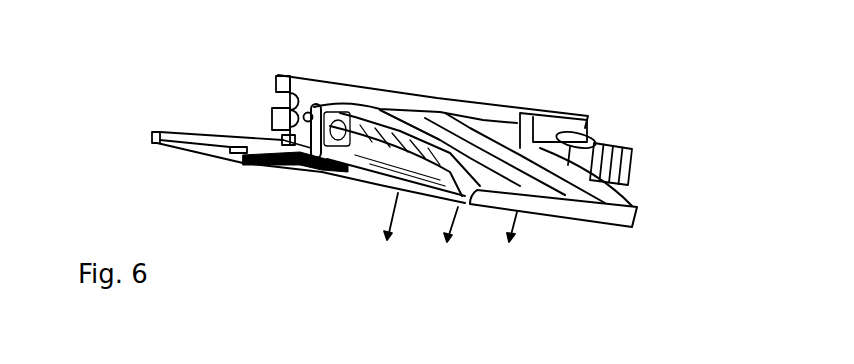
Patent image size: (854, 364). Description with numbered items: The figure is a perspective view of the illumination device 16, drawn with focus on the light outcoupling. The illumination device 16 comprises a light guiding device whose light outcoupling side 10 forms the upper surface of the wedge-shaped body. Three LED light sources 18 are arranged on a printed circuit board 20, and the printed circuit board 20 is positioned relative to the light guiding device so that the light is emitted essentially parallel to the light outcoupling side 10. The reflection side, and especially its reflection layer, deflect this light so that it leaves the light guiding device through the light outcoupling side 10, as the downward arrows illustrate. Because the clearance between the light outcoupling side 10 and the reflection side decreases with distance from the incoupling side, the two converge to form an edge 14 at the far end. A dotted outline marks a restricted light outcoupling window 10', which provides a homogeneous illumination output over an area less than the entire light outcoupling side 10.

The light outcoupling side 10 is at (440, 203).
The restricted light outcoupling window 10' is at (425, 229).
The edge 14 is at (640, 213).
The illumination device 16 is at (301, 190).
The light sources 18 is at (274, 119).
The printed circuit board 20 is at (437, 107).